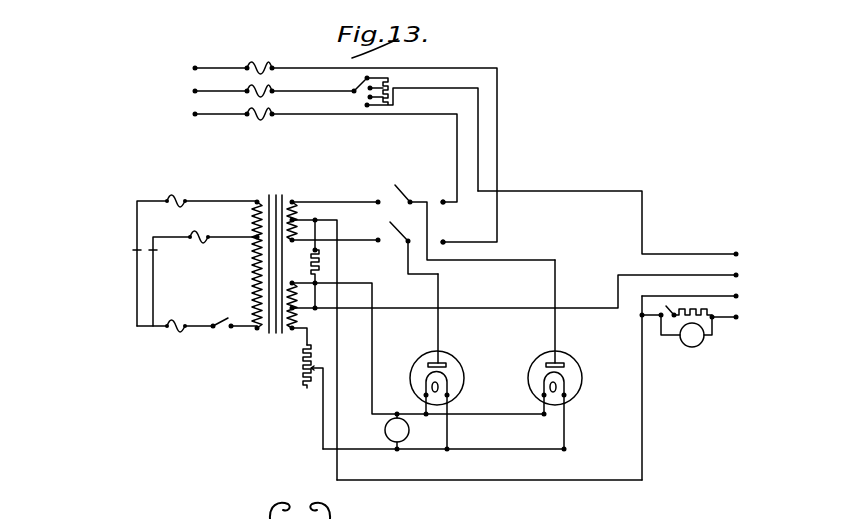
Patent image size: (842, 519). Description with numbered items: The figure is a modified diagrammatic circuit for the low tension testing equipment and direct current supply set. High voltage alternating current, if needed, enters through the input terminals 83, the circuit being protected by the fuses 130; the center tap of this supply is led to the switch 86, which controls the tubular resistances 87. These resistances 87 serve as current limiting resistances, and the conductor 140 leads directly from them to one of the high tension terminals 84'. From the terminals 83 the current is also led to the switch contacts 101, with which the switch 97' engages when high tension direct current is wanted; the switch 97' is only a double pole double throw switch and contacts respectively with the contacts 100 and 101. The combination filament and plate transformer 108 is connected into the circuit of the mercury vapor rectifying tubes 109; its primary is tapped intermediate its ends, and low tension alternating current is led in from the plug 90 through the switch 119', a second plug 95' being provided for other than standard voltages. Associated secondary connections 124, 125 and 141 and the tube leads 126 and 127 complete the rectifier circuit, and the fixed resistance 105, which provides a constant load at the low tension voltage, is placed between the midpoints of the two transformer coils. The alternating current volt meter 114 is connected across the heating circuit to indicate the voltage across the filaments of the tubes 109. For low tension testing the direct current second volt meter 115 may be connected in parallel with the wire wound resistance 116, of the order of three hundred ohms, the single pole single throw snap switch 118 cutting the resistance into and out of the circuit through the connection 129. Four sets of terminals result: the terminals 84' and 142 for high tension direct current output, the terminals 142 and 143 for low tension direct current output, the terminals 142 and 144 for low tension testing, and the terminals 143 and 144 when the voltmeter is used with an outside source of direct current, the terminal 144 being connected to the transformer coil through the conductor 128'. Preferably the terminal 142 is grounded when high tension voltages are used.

The high voltage alternating current input terminals 83 is at (195, 112).
The fuses 130 is at (263, 44).
The switch 86 is at (356, 86).
The tubular resistances 87 is at (392, 78).
The combination filament and plate transformer 108 is at (275, 195).
The plug 90 is at (137, 251).
The contact 95' is at (171, 278).
The switch 119' is at (197, 342).
The secondary winding lead 124 is at (350, 201).
The switch contacts 100 is at (378, 240).
The resistor 125 is at (321, 262).
The fixed resistance 105 is at (320, 271).
The conductor 141 is at (450, 309).
The switch 97' is at (472, 218).
The switch contacts 101 is at (444, 206).
The conductor 140 is at (515, 191).
The high tension terminal 84' is at (753, 241).
The terminal 142 is at (738, 275).
The terminal 143 is at (738, 296).
The terminal 144 is at (738, 317).
The plate lead 126 is at (557, 265).
The plate lead 127 is at (440, 332).
The mercury vapor rectifying tubes 109 is at (452, 370).
The alternating current volt meter 114 is at (410, 430).
The single pole single throw snap switch 118 is at (306, 381).
The wire wound resistance 116 is at (714, 325).
The direct current second volt meter 115 is at (702, 346).
The conductor 129 is at (642, 326).
The conductor 128' is at (489, 495).